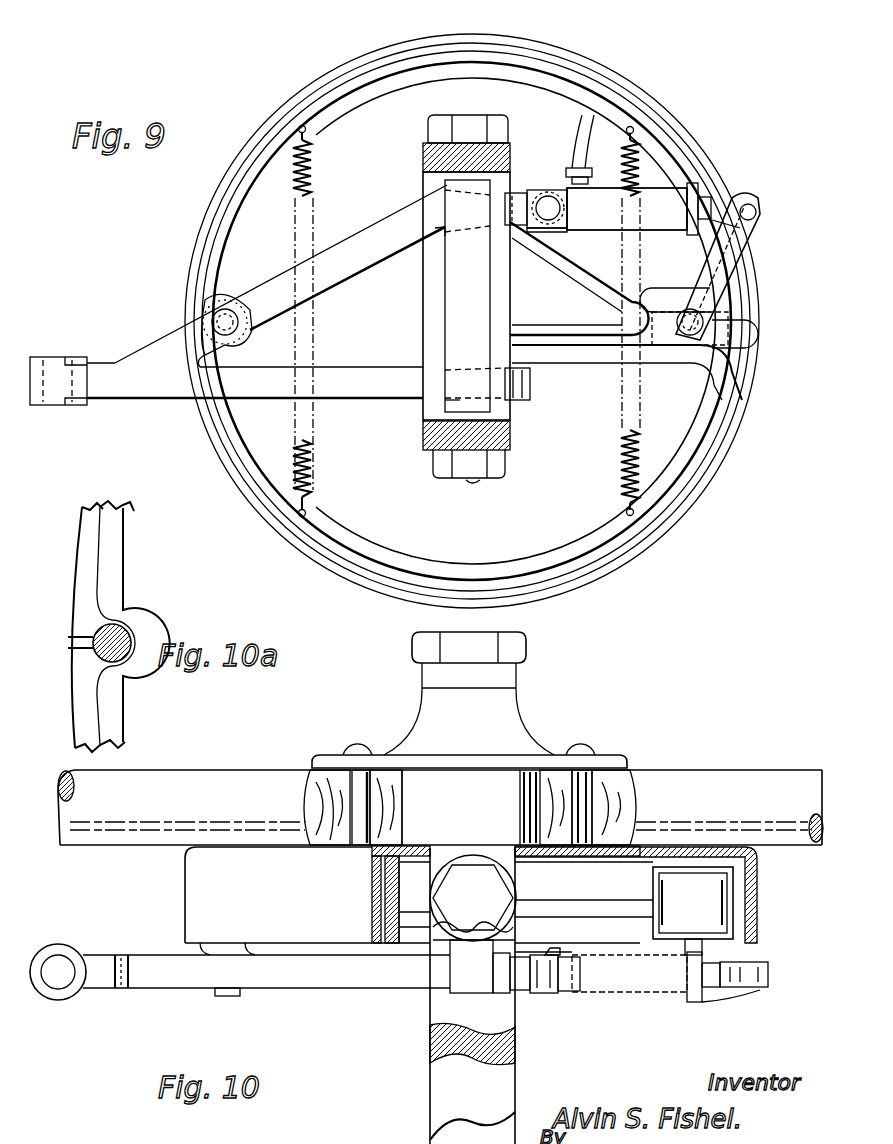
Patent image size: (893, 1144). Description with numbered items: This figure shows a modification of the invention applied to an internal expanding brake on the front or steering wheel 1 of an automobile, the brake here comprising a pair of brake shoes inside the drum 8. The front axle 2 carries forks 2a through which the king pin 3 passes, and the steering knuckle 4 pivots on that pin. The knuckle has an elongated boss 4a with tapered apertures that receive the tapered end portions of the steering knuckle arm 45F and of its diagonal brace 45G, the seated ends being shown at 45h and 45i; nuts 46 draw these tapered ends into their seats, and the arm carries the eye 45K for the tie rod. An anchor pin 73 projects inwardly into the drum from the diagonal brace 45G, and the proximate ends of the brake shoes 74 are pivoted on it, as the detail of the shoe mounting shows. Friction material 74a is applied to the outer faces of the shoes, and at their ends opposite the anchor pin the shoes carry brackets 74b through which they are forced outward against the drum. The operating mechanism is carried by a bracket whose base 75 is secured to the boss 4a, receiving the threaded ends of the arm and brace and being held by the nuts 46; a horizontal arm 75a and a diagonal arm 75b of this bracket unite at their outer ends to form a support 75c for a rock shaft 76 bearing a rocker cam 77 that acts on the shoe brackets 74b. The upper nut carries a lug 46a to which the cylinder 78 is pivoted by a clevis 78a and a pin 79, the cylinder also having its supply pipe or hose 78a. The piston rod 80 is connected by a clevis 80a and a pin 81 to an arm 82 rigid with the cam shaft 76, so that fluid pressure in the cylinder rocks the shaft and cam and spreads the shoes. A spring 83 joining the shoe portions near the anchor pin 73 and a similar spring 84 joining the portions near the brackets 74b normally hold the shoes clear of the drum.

In FIG. 10, the steering wheel 1 is at (612, 778).
In FIG. 10, the front axle 2 is at (440, 1114).
In FIG. 9, the forks of the front axle 2a is at (423, 155).
In FIG. 10, the forks of the front axle 2a is at (430, 1027).
In FIG. 9, the king pin 3 is at (475, 484).
In FIG. 10, the king pin 3 is at (473, 924).
In FIG. 9, the steering knuckle 4 is at (423, 314).
In FIG. 9, the elongated boss 4a is at (475, 296).
In FIG. 9, the housing 8 is at (735, 415).
In FIG. 10, the housing 8 is at (777, 901).
In FIG. 9, the steering knuckle arm 45F is at (255, 376).
In FIG. 9, the diagonal brace 45G is at (281, 274).
In FIG. 10, the diagonal brace 45G is at (172, 990).
In FIG. 9, the lever end 45h is at (447, 404).
In FIG. 9, the link end 45i is at (443, 222).
In FIG. 9, the eye for the tie rod 45K is at (67, 405).
In FIG. 10, the eye for the tie rod 45K is at (74, 952).
In FIG. 9, the nuts 46 is at (518, 190).
In FIG. 10, the nuts 46 is at (523, 995).
In FIG. 9, the lug 46a is at (558, 188).
In FIG. 10, the lug 46a is at (546, 975).
In FIG. 9, the anchor pin 73 is at (235, 302).
In FIG. 10A, the anchor pin 73 is at (130, 633).
In FIG. 10, the anchor pin 73 is at (228, 997).
In FIG. 9, the brake shoes 74 is at (382, 88).
In FIG. 10A, the brake shoes 74 is at (84, 563).
In FIG. 10, the brake shoes 74 is at (393, 945).
In FIG. 9, the friction material 74a is at (540, 62).
In FIG. 10, the friction material 74a is at (373, 905).
In FIG. 9, the brackets 74b is at (670, 292).
In FIG. 9, the base of bracket 75 is at (497, 302).
In FIG. 9, the horizontal arm 75a is at (560, 336).
In FIG. 9, the diagonal arm 75b is at (574, 262).
In FIG. 9, the support 75c is at (712, 352).
In FIG. 9, the rock shaft 76 is at (703, 322).
In FIG. 10, the rock shaft 76 is at (707, 952).
In FIG. 9, the rocker cam 77 is at (746, 336).
In FIG. 10, the rocker cam 77 is at (693, 911).
In FIG. 9, the cylinder 78 is at (588, 144).
In FIG. 10, the cylinder 78 is at (670, 977).
In FIG. 9, the clevis 78a is at (556, 232).
In FIG. 10, the clevis 78a is at (562, 994).
In FIG. 9, the pin 79 is at (548, 222).
In FIG. 10, the pin 79 is at (553, 996).
In FIG. 9, the piston rod 80 is at (720, 208).
In FIG. 9, the clevis 80a is at (745, 200).
In FIG. 9, the pin 81 is at (757, 212).
In FIG. 9, the arm 82 is at (748, 238).
In FIG. 10, the arm 82 is at (724, 1003).
In FIG. 9, the spring 83 is at (312, 187).
In FIG. 9, the spring 84 is at (622, 468).